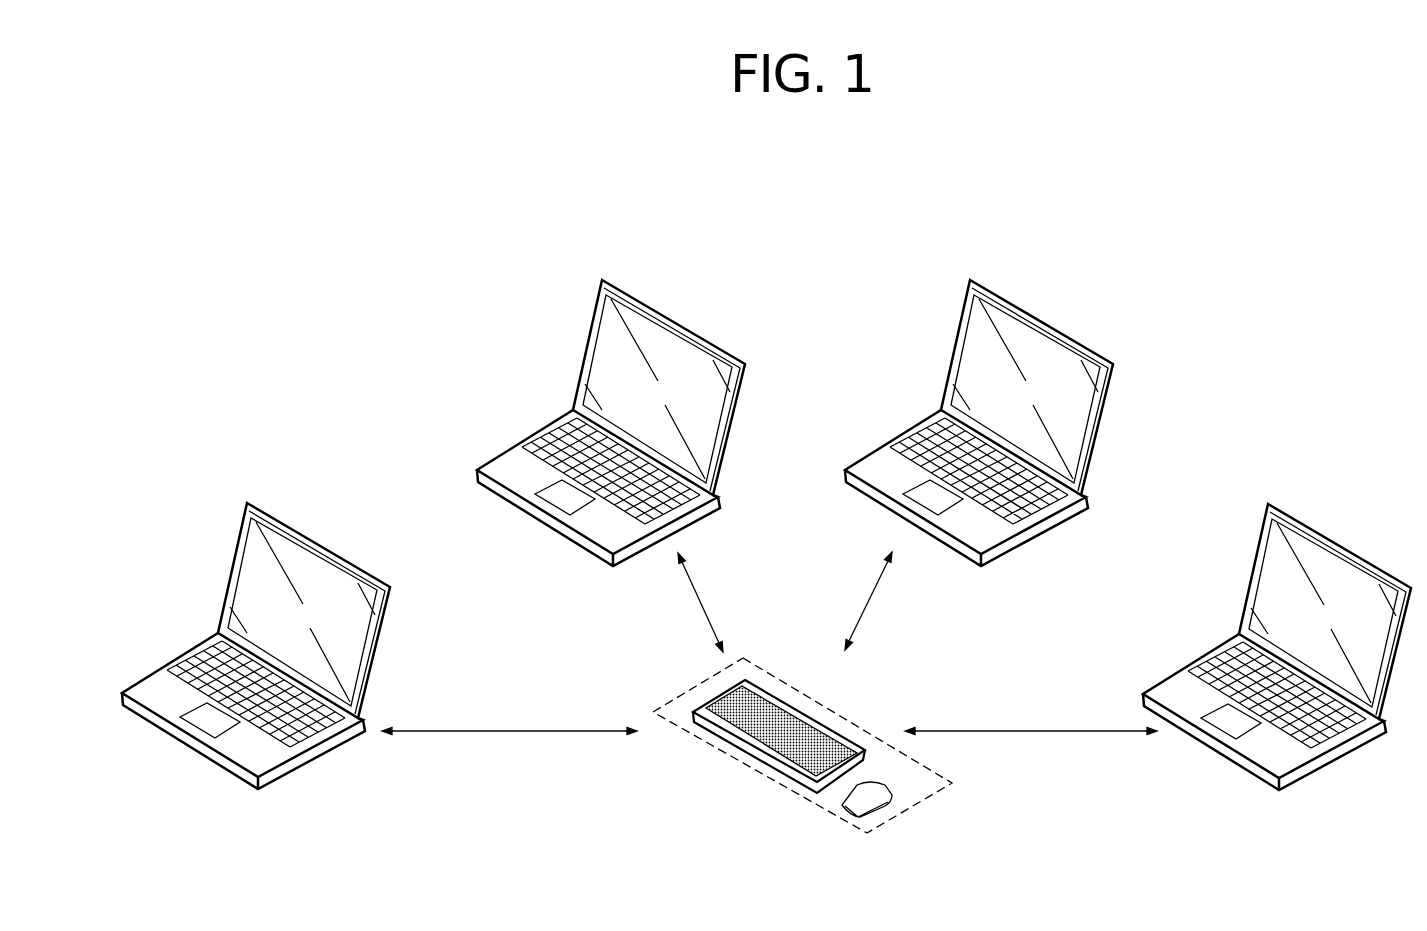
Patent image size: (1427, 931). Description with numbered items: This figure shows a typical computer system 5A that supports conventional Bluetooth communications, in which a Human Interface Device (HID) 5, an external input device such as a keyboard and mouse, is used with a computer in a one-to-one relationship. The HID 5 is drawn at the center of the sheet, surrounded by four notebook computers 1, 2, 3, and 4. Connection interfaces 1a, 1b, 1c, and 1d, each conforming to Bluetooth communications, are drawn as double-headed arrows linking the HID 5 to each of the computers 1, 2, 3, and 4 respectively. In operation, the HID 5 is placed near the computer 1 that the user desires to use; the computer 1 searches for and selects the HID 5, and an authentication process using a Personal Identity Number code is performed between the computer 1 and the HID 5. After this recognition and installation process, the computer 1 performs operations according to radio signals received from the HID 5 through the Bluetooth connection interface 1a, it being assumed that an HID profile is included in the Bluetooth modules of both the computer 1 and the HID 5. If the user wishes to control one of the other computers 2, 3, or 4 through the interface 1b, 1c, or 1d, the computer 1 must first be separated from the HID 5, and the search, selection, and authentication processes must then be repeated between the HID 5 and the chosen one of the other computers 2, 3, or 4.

The computer 1 is at (318, 542).
The computer 2 is at (611, 410).
The computer 3 is at (979, 410).
The computer 4 is at (1277, 634).
The Human Interface Device (HID) 5 is at (758, 776).
The computer system 5A is at (1178, 264).
The connection interface 1a is at (509, 720).
The connection interface 1b is at (704, 602).
The connection interface 1c is at (868, 601).
The connection interface 1d is at (1031, 720).